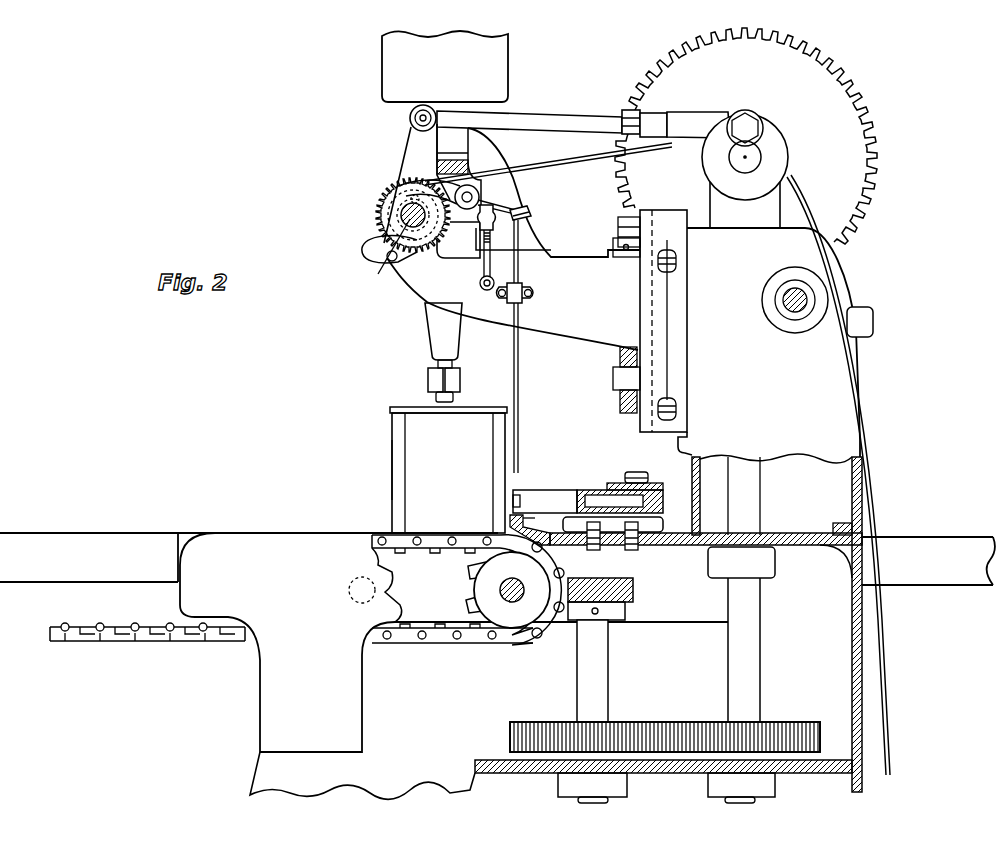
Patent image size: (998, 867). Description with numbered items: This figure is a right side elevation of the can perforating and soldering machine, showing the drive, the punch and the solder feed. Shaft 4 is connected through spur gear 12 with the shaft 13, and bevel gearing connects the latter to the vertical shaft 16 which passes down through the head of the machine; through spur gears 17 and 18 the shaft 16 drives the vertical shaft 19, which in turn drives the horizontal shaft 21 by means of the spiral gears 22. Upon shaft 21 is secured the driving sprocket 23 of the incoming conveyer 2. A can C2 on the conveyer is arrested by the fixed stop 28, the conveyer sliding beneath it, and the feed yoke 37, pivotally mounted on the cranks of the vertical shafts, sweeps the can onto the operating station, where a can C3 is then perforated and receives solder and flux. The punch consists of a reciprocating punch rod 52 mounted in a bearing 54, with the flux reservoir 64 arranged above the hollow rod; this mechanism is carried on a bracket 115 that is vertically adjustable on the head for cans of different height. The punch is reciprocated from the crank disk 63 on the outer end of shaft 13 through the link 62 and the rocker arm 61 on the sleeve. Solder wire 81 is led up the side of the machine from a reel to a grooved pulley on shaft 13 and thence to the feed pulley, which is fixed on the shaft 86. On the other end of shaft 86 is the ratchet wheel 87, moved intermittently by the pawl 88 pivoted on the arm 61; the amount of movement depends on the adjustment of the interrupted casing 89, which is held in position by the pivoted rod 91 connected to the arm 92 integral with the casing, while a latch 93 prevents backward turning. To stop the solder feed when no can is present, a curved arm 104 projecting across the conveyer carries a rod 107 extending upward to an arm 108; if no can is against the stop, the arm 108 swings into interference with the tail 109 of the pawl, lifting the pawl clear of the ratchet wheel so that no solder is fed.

The incoming conveyer 2 is at (430, 546).
The shaft 4 is at (795, 306).
The spur gear 12 is at (746, 136).
The shaft 13 is at (745, 163).
The vertical shaft 16 is at (748, 497).
The spur gear 17 is at (790, 724).
The spur gear 18 is at (510, 736).
The vertical shaft 19 is at (600, 656).
The horizontal shaft 21 is at (512, 590).
The spiral gears 22 is at (633, 591).
The driving sprocket 23 is at (485, 590).
The fixed stop 28 is at (527, 513).
The feed yoke 37 is at (562, 494).
The punch rod 52 is at (456, 364).
The bearing 54 is at (430, 330).
The rocker arm 61 is at (425, 153).
The link 62 is at (588, 119).
The crank disk 63 is at (790, 151).
The flux reservoir 64 is at (445, 66).
The wire 81 is at (868, 353).
The shaft 86 is at (382, 258).
The ratchet wheel 87 is at (386, 213).
The pawl 88 is at (400, 187).
The interrupted casing 89 is at (388, 228).
The pivoted rod 91 is at (484, 262).
The arm 92 is at (473, 236).
The latch 93 is at (366, 255).
The curved arm 104 is at (508, 521).
The rod 107 is at (520, 377).
The arm 108 is at (532, 210).
The tail 109 is at (528, 217).
The bracket 115 is at (623, 290).
The can C2 is at (448, 470).
The can C3 is at (396, 457).